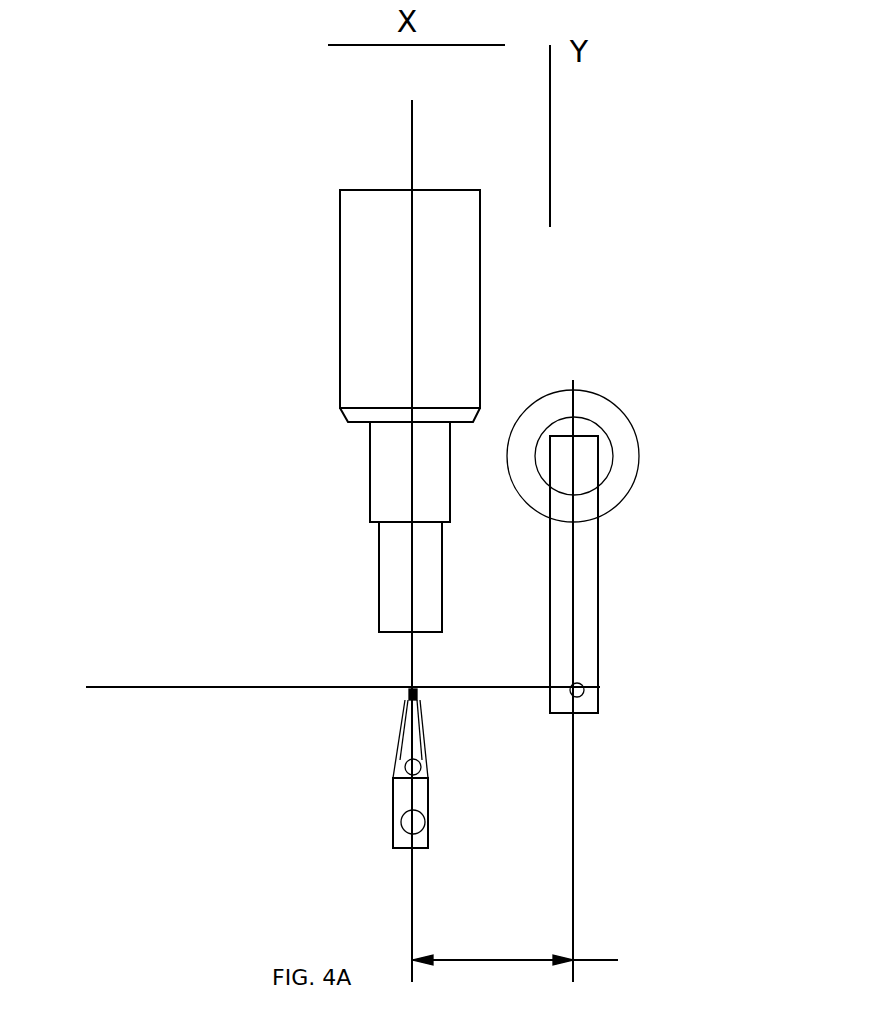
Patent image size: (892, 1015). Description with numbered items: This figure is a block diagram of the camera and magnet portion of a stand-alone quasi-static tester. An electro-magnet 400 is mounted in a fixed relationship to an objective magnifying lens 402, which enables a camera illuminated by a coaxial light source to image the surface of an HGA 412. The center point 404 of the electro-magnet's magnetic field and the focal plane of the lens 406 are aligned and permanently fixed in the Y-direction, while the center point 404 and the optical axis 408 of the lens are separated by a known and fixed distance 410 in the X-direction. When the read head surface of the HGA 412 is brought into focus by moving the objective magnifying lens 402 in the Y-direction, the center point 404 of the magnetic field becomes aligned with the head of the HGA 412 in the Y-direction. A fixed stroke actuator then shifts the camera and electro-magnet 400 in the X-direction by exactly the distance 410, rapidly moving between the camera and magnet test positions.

The electro-magnet 400 is at (599, 573).
The objective magnifying lens 402 is at (360, 332).
The center point 404 is at (582, 693).
The focal plane of the lens 406 is at (113, 685).
The optical axis 408 is at (410, 298).
The fixed distance 410 is at (547, 970).
The HGA 412 is at (393, 778).